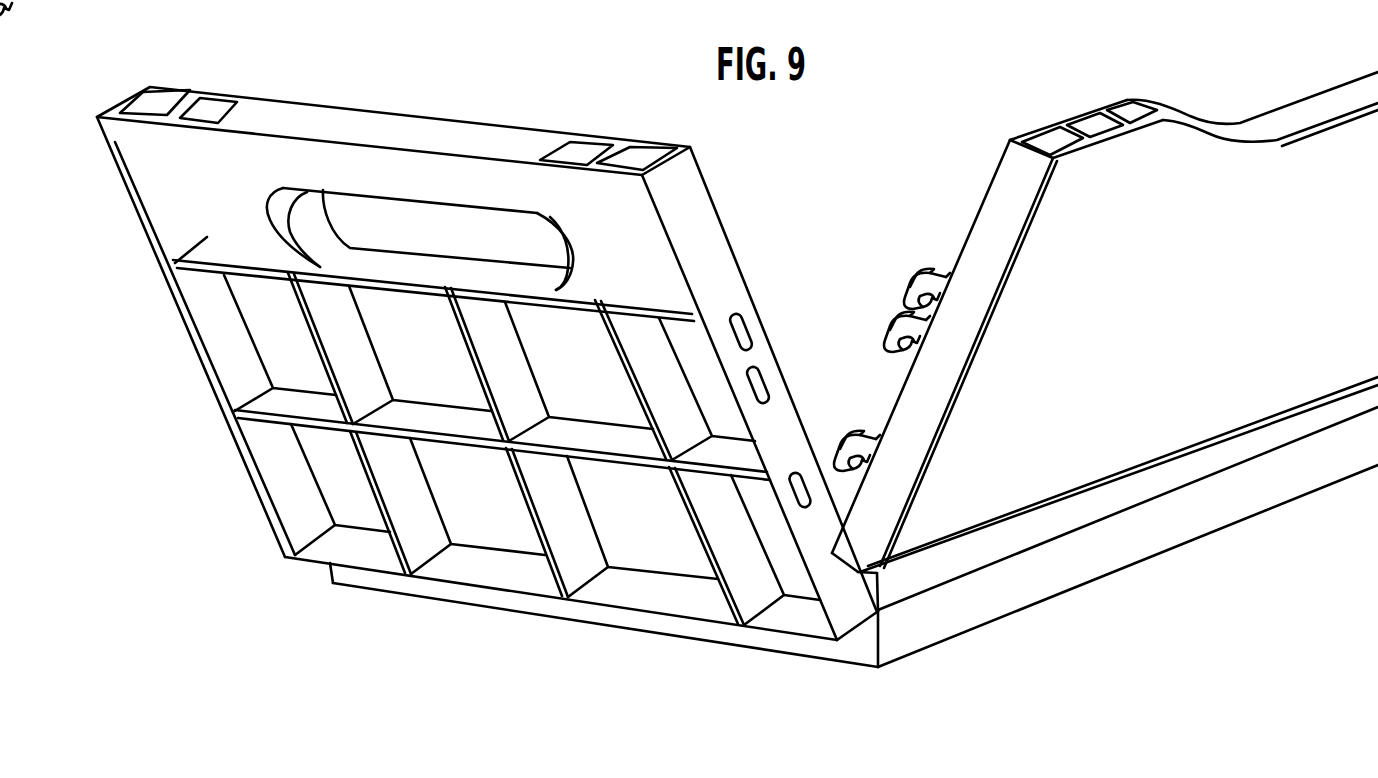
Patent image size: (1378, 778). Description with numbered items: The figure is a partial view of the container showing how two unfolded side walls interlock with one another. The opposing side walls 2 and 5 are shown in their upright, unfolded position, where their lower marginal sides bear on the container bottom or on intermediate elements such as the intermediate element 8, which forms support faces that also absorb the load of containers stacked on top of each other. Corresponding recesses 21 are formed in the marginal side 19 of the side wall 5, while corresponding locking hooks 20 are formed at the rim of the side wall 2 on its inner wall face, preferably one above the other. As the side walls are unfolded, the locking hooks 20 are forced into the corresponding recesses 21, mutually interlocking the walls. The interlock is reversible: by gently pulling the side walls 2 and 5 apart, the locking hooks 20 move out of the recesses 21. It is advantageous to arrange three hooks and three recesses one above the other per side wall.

The side wall 2 is at (1173, 313).
The side wall 5 is at (461, 178).
The intermediate element 8 is at (886, 580).
The marginal side 19 is at (705, 210).
The locking hook 20 is at (940, 273).
The recess 21 is at (737, 321).